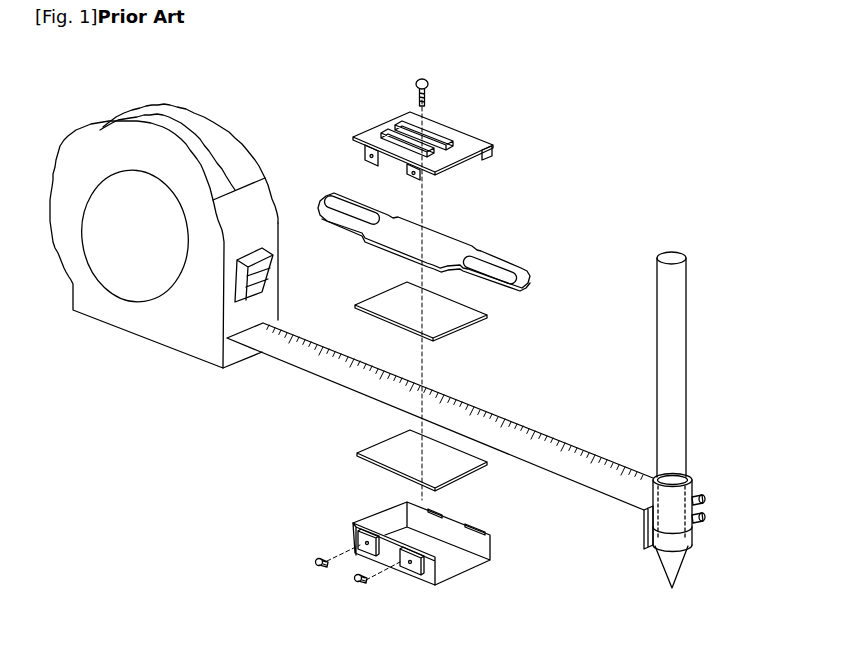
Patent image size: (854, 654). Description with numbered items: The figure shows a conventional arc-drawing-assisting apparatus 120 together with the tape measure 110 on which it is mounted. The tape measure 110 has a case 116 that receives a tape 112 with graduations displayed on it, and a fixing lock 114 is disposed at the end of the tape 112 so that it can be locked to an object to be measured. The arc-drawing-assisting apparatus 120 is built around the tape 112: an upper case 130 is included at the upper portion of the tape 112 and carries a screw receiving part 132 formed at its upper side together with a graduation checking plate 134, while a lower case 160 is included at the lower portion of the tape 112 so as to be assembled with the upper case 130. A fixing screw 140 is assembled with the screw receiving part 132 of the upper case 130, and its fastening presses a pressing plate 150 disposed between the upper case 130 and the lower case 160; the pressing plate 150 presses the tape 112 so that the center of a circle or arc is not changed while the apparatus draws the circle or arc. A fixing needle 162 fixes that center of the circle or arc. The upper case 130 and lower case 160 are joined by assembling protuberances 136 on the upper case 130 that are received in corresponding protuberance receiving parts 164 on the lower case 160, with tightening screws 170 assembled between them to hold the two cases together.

The tape measure 110 is at (213, 105).
The tape 112 is at (553, 436).
The tape end tab 114 is at (643, 524).
The case 116 is at (236, 148).
The arc-drawing-assisting apparatus 120 is at (576, 157).
The upper case 130 is at (429, 136).
The screw receiving part 132 is at (428, 126).
The graduation checking plate 134 is at (455, 130).
The assembling protuberance 136 is at (363, 155).
The fixing screw 140 is at (444, 70).
The pressing plate 150 is at (484, 318).
The lower case 160 is at (435, 573).
The fixing needle 162 is at (428, 582).
The protuberance receiving part 164 is at (410, 571).
The tightening screw 170 is at (358, 580).